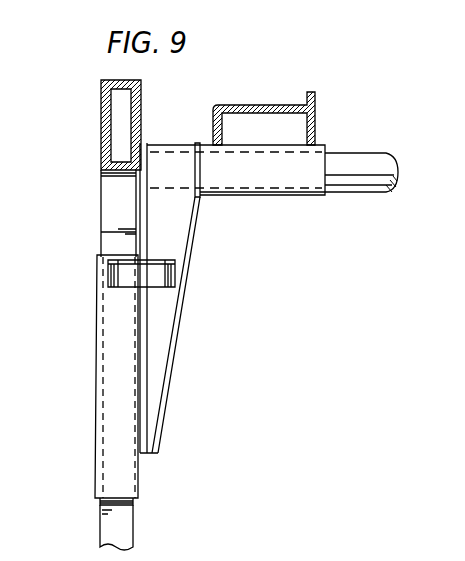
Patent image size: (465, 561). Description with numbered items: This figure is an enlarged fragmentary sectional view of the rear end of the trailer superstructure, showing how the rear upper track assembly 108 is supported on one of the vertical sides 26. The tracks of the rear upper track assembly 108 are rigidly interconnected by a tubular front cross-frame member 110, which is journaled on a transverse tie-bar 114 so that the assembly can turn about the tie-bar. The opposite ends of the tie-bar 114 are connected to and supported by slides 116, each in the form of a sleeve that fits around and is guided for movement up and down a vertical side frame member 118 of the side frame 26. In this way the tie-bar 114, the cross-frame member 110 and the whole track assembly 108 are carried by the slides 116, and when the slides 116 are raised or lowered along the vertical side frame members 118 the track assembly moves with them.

The vertical side 26 is at (101, 130).
The rear upper track assembly 108 is at (272, 108).
The tubular front cross-frame member 110 is at (280, 181).
The transverse tie-bar 114 is at (368, 160).
The slide 116 is at (108, 343).
The vertical side frame member 118 is at (108, 212).